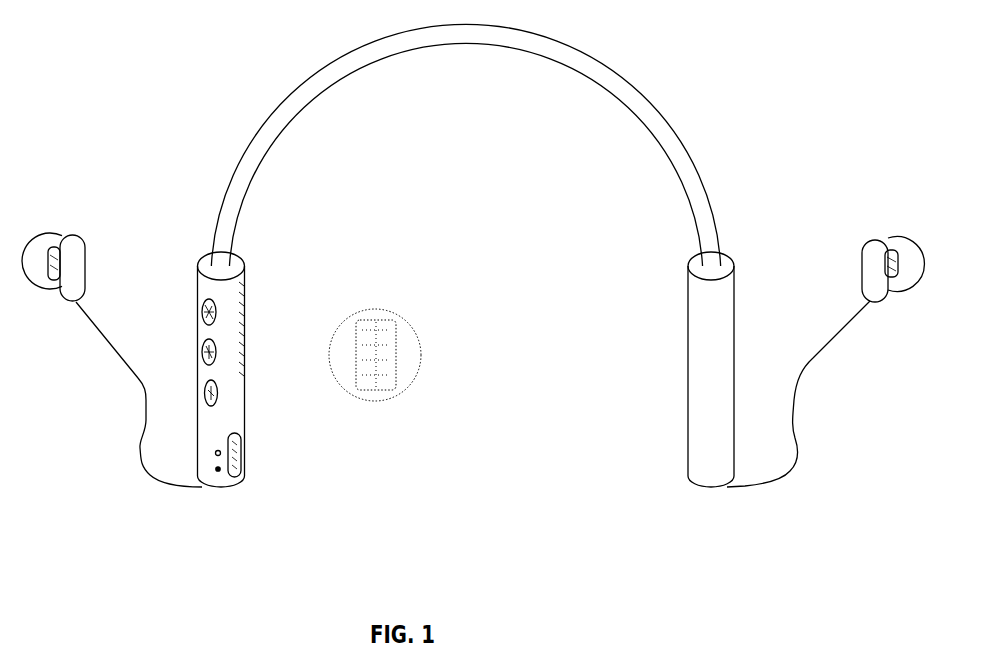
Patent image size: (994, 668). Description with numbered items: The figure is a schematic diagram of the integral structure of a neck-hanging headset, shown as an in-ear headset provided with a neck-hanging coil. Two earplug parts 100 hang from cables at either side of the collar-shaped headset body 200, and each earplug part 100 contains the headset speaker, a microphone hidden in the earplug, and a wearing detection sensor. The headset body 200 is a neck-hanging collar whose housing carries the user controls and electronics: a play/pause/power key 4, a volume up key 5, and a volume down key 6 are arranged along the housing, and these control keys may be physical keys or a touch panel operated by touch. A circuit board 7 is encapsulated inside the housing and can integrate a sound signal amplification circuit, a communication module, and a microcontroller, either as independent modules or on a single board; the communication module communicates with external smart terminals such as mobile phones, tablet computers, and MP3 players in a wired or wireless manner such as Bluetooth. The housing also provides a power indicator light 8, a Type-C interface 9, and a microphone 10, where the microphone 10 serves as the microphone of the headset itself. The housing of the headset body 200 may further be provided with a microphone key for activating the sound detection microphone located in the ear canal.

The earplug part 100 is at (40, 233).
The headset body 200 is at (243, 268).
The play/pause/power key 4 is at (200, 313).
The volume up key 5 is at (200, 352).
The volume down key 6 is at (203, 393).
The circuit board 7 is at (237, 368).
The power indicator light 8 is at (215, 453).
The Type-C interface 9 is at (243, 452).
The microphone 10 is at (218, 471).